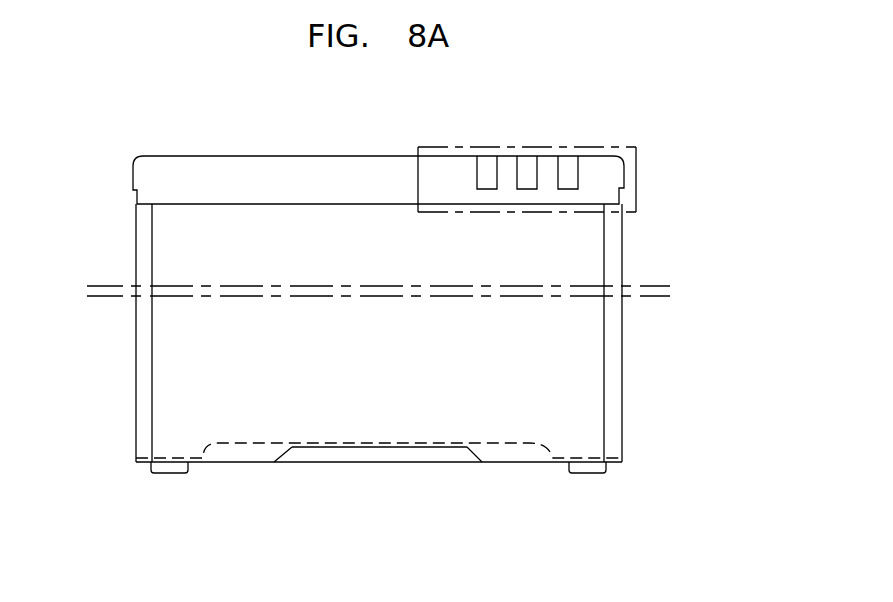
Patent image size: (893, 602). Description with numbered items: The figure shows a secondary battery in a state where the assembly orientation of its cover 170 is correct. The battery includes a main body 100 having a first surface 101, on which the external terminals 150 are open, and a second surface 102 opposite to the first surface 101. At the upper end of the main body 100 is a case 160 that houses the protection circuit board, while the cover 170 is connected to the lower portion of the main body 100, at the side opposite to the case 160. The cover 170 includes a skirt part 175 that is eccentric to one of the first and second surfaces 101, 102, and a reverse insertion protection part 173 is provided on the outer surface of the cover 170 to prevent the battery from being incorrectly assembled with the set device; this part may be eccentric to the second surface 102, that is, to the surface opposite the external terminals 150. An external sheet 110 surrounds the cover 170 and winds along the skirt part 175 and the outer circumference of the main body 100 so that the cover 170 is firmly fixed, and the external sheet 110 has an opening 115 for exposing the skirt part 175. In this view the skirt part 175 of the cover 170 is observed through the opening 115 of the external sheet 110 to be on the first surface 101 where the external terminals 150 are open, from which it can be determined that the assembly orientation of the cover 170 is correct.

The main body 100 is at (654, 312).
The first surface 101 is at (597, 342).
The second surface 102 is at (622, 383).
The external sheet 110 is at (168, 370).
The opening 115 is at (283, 453).
The external terminals 150 is at (528, 162).
The case 160 is at (618, 175).
The cover 170 is at (658, 467).
The reverse insertion protection part 173 is at (588, 465).
The skirt part 175 is at (379, 454).